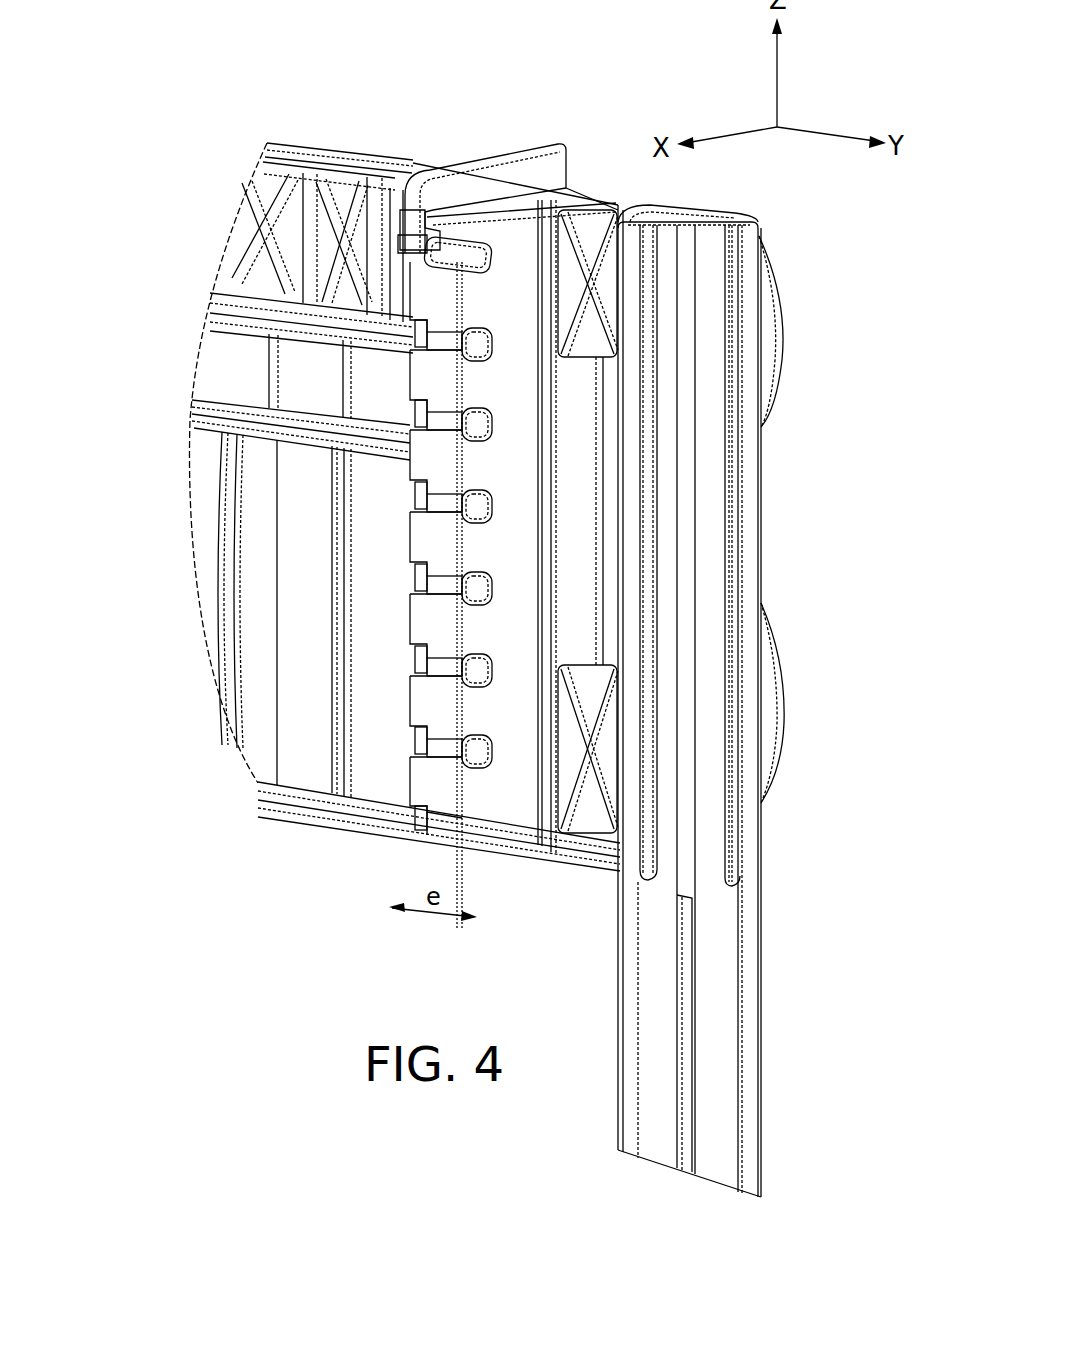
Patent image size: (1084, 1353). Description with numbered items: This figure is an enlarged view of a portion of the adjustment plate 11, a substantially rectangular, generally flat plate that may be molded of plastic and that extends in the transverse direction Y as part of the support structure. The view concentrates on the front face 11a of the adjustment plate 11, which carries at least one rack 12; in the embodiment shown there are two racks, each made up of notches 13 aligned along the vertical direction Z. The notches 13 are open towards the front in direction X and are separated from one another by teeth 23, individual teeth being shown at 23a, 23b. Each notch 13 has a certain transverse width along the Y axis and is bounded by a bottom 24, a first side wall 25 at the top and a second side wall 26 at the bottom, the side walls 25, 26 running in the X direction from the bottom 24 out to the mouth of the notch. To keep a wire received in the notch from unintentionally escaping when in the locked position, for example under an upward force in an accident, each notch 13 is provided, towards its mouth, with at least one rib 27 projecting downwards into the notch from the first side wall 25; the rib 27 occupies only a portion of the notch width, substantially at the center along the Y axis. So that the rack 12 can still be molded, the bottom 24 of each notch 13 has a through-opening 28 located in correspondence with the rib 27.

The adjustment plate 11 is at (396, 126).
The front face 11a is at (222, 362).
The rack 12 is at (500, 126).
The notch 13 is at (500, 348).
The teeth 23 is at (478, 382).
The first face of connecting plate 23a is at (425, 460).
The second face of connecting plate 23b is at (427, 495).
The bottom 24 is at (478, 593).
The first side wall 25 is at (483, 752).
The second side wall 26 is at (478, 770).
The rib 27 is at (417, 673).
The through-opening 28 is at (462, 597).